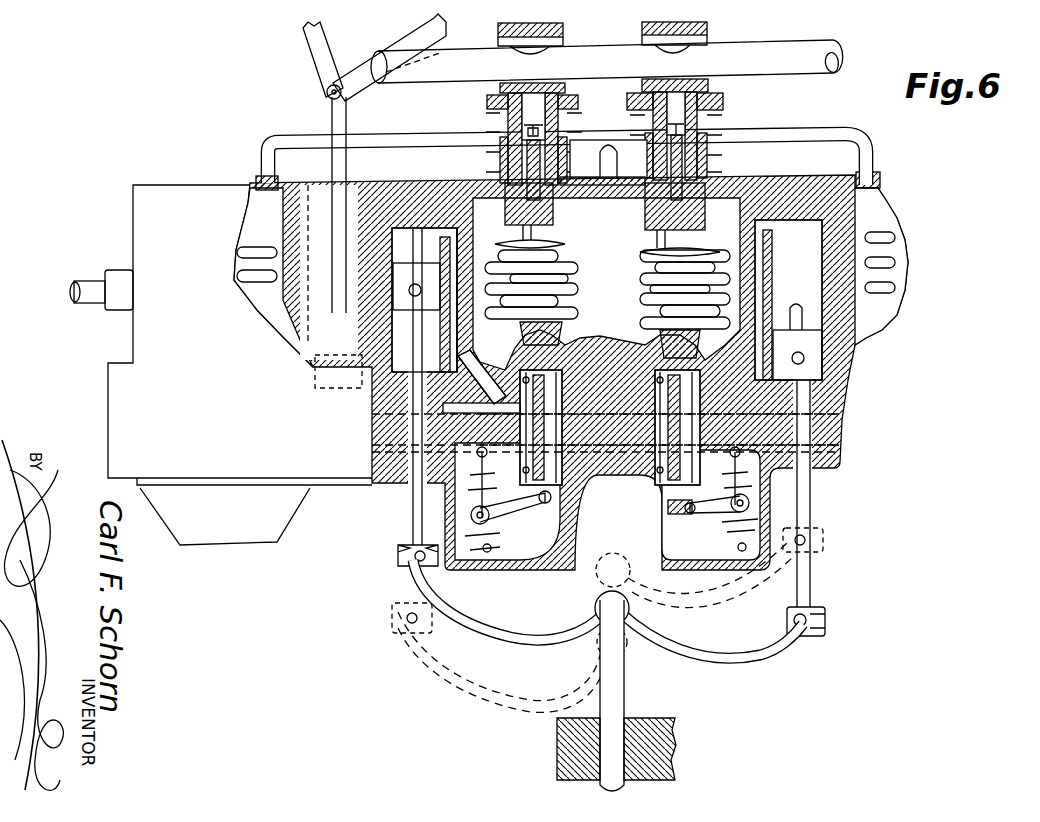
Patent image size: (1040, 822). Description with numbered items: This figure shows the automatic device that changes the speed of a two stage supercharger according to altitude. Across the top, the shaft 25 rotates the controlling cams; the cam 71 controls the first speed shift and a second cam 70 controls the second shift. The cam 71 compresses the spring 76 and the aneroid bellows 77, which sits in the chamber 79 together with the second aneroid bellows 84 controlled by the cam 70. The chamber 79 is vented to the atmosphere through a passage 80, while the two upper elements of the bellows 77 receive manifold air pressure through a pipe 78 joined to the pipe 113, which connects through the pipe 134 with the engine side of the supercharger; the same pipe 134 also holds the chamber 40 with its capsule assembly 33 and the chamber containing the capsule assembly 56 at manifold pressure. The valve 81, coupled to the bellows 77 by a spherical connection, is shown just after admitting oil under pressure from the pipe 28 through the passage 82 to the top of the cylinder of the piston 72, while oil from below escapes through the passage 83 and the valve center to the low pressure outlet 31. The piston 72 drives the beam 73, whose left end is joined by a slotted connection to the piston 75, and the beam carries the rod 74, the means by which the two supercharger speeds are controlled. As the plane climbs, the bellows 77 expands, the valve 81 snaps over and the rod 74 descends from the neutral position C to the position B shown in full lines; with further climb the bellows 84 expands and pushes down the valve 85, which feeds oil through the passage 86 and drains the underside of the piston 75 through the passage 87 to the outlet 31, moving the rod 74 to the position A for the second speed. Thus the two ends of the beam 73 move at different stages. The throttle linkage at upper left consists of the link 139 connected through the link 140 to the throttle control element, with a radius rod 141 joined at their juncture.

The shaft 25 is at (607, 61).
The pipe 28 is at (841, 410).
The low pressure outlet 31 is at (841, 440).
The capsule assembly 33 is at (885, 235).
The chamber 40 is at (872, 190).
The capsule assembly 56 is at (257, 251).
The cam 70 is at (565, 28).
The cam 71 is at (707, 27).
The piston 72 is at (797, 355).
The beam 73 is at (768, 650).
The rod 74 is at (622, 708).
The piston 75 is at (424, 397).
The spring 76 is at (700, 122).
The aneroid bellows 77 is at (700, 250).
The pipe 78 is at (604, 162).
The chamber 79 is at (607, 267).
The passage 80 is at (487, 178).
The valve 81 is at (665, 355).
The passage 82 is at (766, 294).
The passage 83 is at (705, 370).
The aneroid bellows 84 is at (522, 235).
The valve 85 is at (562, 338).
The passage 86 is at (457, 326).
The passage 87 is at (515, 365).
The pipe 113 is at (795, 134).
The pipe 134 is at (70, 293).
The link 139 is at (324, 36).
The link 140 is at (347, 124).
The radius rod 141 is at (443, 30).
The position A is at (592, 645).
The position B is at (596, 610).
The position C is at (597, 571).